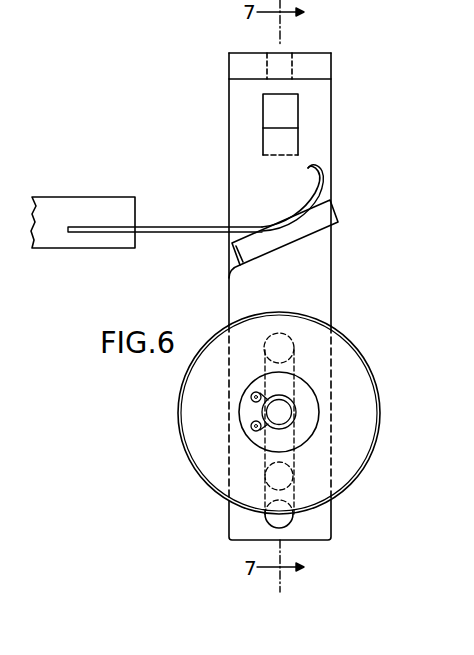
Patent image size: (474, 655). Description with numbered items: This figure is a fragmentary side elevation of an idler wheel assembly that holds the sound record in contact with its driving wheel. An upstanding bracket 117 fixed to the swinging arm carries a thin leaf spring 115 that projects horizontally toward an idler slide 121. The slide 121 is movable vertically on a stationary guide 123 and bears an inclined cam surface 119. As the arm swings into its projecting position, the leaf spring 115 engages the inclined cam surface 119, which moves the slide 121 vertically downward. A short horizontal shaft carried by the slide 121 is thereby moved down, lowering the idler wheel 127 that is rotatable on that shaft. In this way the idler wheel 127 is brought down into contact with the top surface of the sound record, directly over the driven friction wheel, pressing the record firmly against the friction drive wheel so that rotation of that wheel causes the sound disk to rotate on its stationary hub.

The leaf spring 115 is at (178, 231).
The upstanding bracket 117 is at (52, 238).
The inclined cam surface 119 is at (320, 195).
The idler slide 121 is at (308, 293).
The stationary guide 123 is at (278, 108).
The idler wheel 127 is at (212, 468).